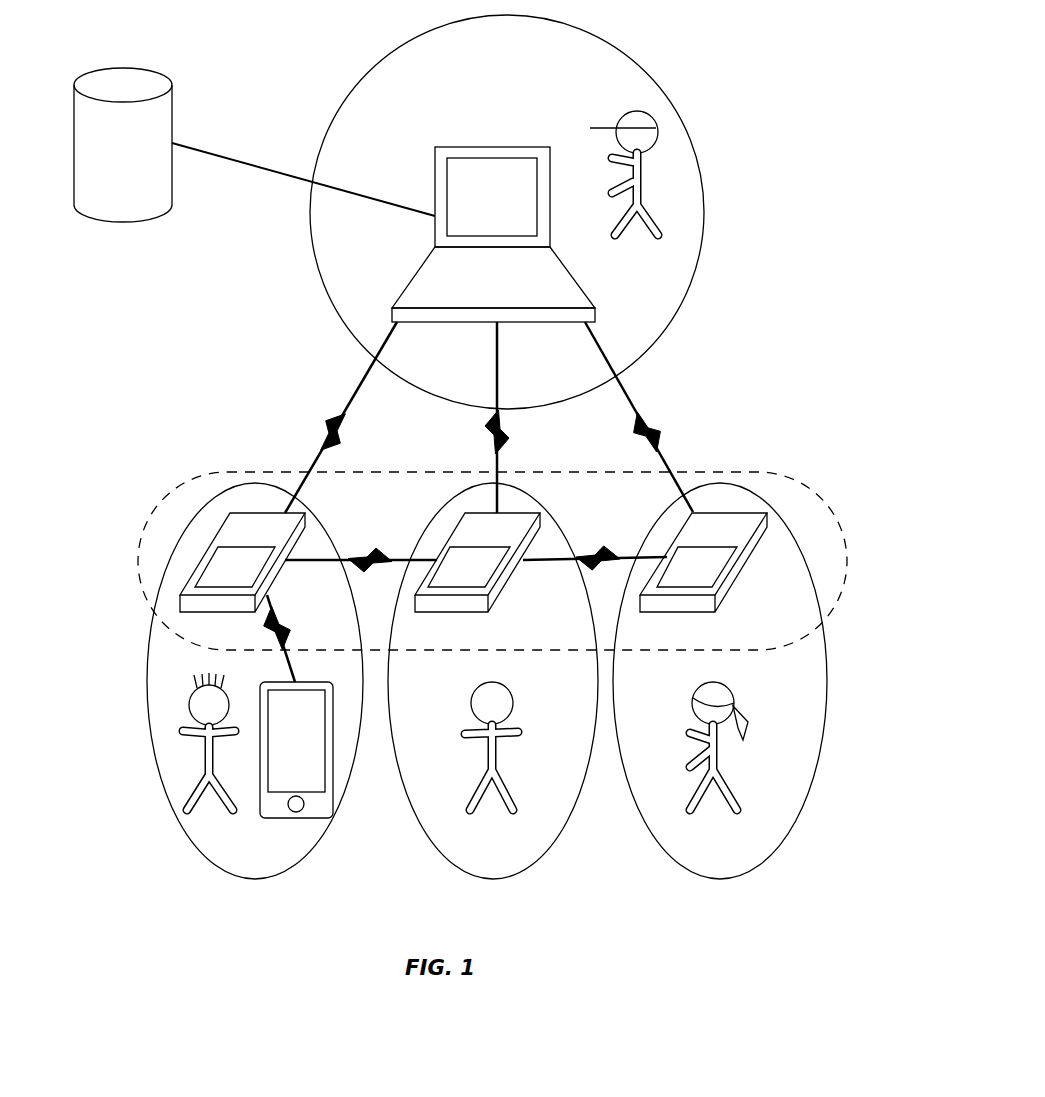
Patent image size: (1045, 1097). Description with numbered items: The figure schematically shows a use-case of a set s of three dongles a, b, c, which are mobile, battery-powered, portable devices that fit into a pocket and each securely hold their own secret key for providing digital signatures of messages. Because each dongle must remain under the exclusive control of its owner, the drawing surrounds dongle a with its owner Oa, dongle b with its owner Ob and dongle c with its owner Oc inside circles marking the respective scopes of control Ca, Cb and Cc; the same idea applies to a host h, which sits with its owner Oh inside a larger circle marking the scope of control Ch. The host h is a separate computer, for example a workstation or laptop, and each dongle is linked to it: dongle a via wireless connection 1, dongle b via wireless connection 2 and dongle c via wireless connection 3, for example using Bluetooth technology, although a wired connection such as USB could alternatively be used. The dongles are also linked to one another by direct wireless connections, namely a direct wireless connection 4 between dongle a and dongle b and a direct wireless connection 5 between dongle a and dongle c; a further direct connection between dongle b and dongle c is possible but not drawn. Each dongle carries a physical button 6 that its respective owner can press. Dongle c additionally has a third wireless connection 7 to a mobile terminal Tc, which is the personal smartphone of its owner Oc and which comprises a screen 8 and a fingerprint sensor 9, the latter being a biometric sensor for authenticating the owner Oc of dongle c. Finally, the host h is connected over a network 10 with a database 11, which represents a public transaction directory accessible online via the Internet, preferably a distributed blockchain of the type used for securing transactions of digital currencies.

The database 11 is at (118, 70).
The network 10 is at (258, 143).
The host h is at (453, 147).
The scope of control Ch is at (648, 76).
The owner of host Oh is at (643, 172).
The wireless connection 3 is at (360, 400).
The wireless connection 1 is at (497, 432).
The wireless connection 2 is at (629, 400).
The set of dongles s is at (770, 476).
The direct wireless connection 5 is at (430, 516).
The direct wireless connection 4 is at (657, 524).
The dongle c is at (282, 573).
The dongle a is at (500, 592).
The dongle b is at (727, 592).
The wireless connection 7 is at (293, 636).
The physical button 6 is at (472, 612).
The scope of control Cc is at (198, 850).
The scope of control Ca is at (568, 870).
The scope of control Cb is at (828, 712).
The owner of dongle Oc is at (205, 763).
The owner of dongle Oa is at (497, 770).
The owner of dongle Ob is at (718, 770).
The mobile terminal Tc is at (333, 790).
The screen 8 is at (302, 765).
The fingerprint sensor 9 is at (296, 812).